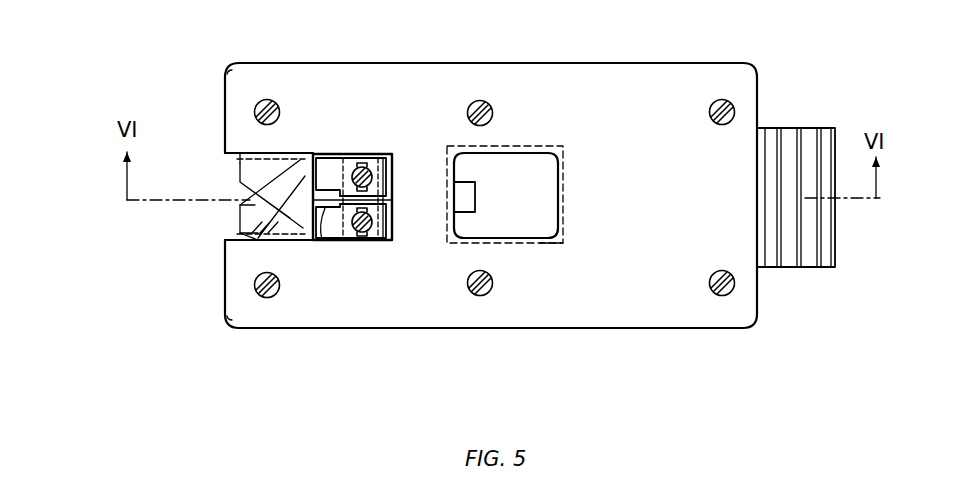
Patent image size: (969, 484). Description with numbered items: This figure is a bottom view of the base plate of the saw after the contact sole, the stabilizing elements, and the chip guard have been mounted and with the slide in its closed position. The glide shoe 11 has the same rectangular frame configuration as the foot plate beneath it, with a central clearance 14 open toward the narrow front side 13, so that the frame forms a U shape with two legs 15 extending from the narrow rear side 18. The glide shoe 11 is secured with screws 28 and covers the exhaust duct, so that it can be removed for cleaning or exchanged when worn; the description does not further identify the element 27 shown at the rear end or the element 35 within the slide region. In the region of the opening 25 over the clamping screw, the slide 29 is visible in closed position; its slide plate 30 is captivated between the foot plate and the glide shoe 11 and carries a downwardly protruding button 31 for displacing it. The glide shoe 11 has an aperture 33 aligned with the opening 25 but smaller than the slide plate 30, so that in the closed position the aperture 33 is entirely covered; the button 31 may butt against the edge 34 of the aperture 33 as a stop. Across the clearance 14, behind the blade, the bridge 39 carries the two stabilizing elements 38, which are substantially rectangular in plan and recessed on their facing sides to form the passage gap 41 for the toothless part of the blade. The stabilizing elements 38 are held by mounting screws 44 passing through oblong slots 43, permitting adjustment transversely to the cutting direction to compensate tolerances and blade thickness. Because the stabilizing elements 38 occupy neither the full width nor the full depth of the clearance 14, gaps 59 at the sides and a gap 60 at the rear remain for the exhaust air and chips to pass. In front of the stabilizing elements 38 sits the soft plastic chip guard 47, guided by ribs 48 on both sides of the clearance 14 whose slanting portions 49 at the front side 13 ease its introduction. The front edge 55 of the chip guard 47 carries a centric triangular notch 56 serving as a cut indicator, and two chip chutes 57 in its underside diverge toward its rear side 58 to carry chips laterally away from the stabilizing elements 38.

The glide shoe 11 is at (662, 103).
The narrow front side 13 is at (221, 104).
The central clearance 14 is at (318, 160).
The legs 15 is at (237, 80).
The narrow rear side 18 is at (761, 86).
The opening 25 is at (523, 150).
The threaded cable fitting 27 is at (805, 150).
The screws 28 is at (265, 99).
The slide 29 is at (554, 248).
The slide plate 30 is at (562, 238).
The button 31 is at (465, 198).
The aperture 33 is at (527, 240).
The edge of aperture 34 is at (445, 166).
The cover 35 is at (500, 185).
The stabilizing elements 38 is at (330, 241).
The bridge 39 is at (364, 166).
The passage gap 41 is at (322, 241).
The oblong slots 43 is at (368, 241).
The mounting screws 44 is at (360, 241).
The chip guard 47 is at (257, 171).
The ribs 48 is at (291, 153).
The slanting portions 49 is at (228, 159).
The front edge 55 is at (241, 233).
The triangular notch 56 is at (241, 208).
The chip chutes 57 is at (240, 243).
The rear side 58 is at (265, 243).
The side gaps 59 is at (338, 241).
The rear gap 60 is at (394, 232).